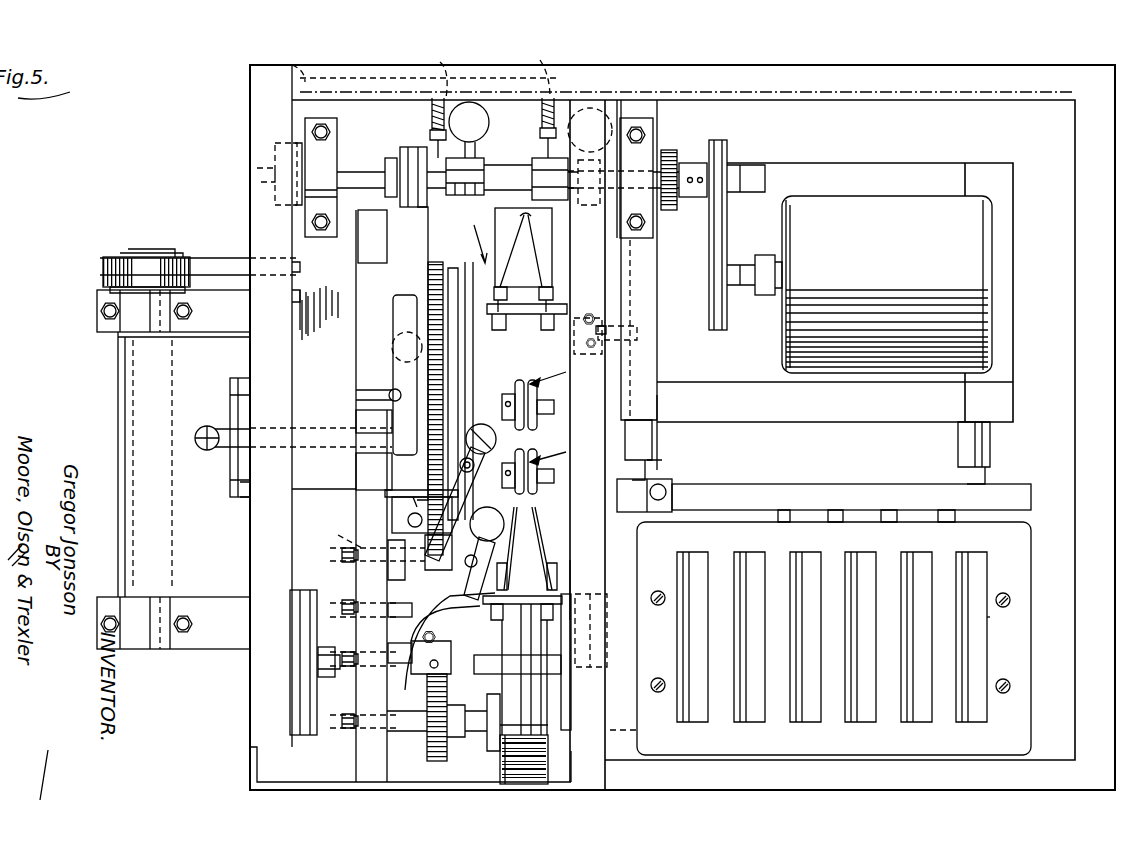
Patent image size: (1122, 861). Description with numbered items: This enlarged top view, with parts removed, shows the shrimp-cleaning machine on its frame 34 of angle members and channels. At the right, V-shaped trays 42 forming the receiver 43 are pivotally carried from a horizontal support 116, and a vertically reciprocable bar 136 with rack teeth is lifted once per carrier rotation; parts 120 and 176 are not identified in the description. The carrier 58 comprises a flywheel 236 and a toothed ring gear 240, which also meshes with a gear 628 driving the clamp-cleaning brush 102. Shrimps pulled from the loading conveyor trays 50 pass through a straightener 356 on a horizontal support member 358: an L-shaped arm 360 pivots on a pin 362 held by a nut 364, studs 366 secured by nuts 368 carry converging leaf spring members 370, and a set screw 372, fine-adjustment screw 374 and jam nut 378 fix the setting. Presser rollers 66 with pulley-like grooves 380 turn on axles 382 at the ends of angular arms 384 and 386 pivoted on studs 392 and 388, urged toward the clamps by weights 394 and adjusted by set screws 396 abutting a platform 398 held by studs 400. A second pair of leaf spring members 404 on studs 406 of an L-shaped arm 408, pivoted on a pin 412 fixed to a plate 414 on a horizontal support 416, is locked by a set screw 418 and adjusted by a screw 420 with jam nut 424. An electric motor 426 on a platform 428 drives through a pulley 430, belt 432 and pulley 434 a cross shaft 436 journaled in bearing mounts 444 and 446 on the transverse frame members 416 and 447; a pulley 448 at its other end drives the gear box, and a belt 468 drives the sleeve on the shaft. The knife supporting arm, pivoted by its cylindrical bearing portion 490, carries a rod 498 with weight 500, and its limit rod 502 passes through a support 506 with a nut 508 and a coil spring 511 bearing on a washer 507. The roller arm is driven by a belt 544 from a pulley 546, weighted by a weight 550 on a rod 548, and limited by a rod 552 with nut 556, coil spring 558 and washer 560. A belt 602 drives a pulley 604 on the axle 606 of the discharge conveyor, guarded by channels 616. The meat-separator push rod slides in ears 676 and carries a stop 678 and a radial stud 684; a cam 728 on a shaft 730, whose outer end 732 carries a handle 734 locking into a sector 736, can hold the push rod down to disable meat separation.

The frame 34 is at (250, 98).
The receptacles or trays 42 is at (880, 555).
The receiver 43 is at (992, 617).
The loading conveyor trays 50 is at (497, 750).
The carrier 58 is at (468, 229).
The presser rollers 66 is at (564, 410).
The brush 102 is at (516, 786).
The horizontal support 116 is at (922, 490).
The feet 120 is at (835, 512).
The vertically reciprocable bar 136 is at (672, 490).
The block 176 is at (392, 516).
The flywheel 236 is at (470, 370).
The ring gear 240 is at (434, 264).
The straightener 356 is at (575, 586).
The horizontal support member 358 is at (385, 562).
The L-shaped arm 360 is at (572, 604).
The pin 362 is at (400, 652).
The nut 364 is at (347, 671).
The studs 366 is at (540, 556).
The nuts 368 is at (590, 593).
The leaf spring members 370 is at (520, 533).
The set screw 372 is at (484, 674).
The screw 374 is at (418, 674).
The jam nut 378 is at (446, 640).
The peripheral grooves 380 is at (524, 444).
The axles 382 is at (657, 402).
The angular arm 384 is at (362, 484).
The angular arm 386 is at (434, 587).
The stud 388 is at (300, 620).
The stud 392 is at (329, 533).
The weights 394 is at (482, 402).
The set screws 396 is at (514, 583).
The platform 398 is at (388, 494).
The studs 400 is at (356, 464).
The leaf spring members 404 is at (524, 243).
The studs or projections 406 is at (514, 326).
The L-shaped arm 408 is at (522, 285).
The pin 412 is at (604, 333).
The plate 414 is at (606, 330).
The horizontal support 416 is at (645, 366).
The set screw 418 is at (640, 340).
The screw 420 is at (596, 314).
The jam nut 424 is at (598, 341).
The electric motor 426 is at (851, 196).
The platform 428 is at (960, 374).
The pulley 430 is at (762, 255).
The belt 432 is at (748, 262).
The pulley 434 is at (710, 160).
The cross shaft 436 is at (728, 178).
The bearing mount 444 is at (640, 172).
The bearing mount 446 is at (310, 160).
The transverse frame member 447 is at (296, 298).
The pulley 448 is at (275, 146).
The belt 468 is at (422, 230).
The cylindrical bearing portion 490 is at (636, 118).
The rod 498 is at (598, 158).
The weight 500 is at (590, 108).
The rod 502 is at (484, 168).
The support 506 is at (303, 75).
The washer 507 is at (540, 174).
The nut 508 is at (540, 60).
The coil spring 511 is at (540, 108).
The belt 544 is at (405, 148).
The pulley 546 is at (388, 158).
The rod 548 is at (475, 150).
The weight 550 is at (470, 102).
The rod 552 is at (430, 132).
The nut 556 is at (440, 62).
The coil spring 558 is at (432, 110).
The washer 560 is at (489, 125).
The belt 602 is at (219, 268).
The pulley 604 is at (125, 252).
The axle 606 is at (105, 288).
The channels 616 is at (100, 309).
The gear 628 is at (438, 762).
The ears 676 is at (392, 390).
The stop 678 is at (395, 347).
The radial stud 684 is at (345, 728).
The cam 728 is at (346, 302).
The shaft 730 is at (380, 428).
The outer end of shaft 732 is at (228, 420).
The handle 734 is at (204, 452).
The arcuate plate or sector 736 is at (232, 497).